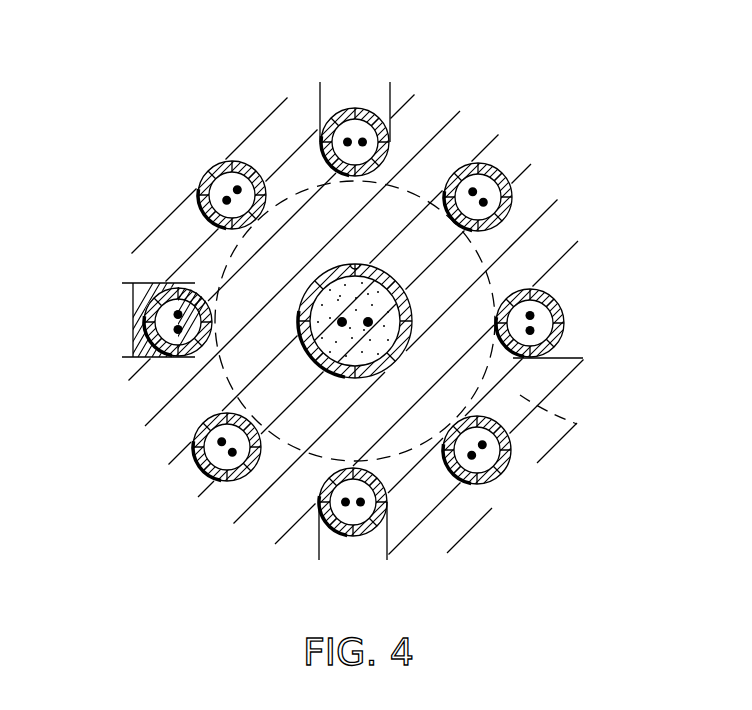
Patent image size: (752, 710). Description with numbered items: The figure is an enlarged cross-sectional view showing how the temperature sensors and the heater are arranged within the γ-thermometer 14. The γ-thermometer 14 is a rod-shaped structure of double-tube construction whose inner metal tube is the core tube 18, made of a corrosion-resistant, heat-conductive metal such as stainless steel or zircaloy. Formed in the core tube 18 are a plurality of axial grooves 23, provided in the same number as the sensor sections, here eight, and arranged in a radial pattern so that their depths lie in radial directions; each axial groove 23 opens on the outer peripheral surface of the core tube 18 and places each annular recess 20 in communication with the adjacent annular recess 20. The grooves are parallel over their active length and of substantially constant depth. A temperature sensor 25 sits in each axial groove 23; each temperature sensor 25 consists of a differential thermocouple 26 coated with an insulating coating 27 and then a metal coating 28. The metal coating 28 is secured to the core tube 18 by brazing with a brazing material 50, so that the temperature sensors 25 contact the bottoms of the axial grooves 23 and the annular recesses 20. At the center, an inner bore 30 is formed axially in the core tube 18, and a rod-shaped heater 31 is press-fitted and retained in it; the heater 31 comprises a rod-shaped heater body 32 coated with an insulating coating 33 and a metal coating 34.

The γ-thermometer 14 is at (480, 103).
The core tube 18 is at (447, 515).
The annular recess 20 is at (573, 422).
The axial groove 23 is at (206, 150).
The temperature sensor 25 is at (356, 106).
The differential thermocouple 26 is at (238, 178).
The insulating coating 27 is at (203, 193).
The metal coating 28 is at (212, 192).
The inner bore 30 is at (402, 180).
The heater 31 is at (628, 203).
The heater body 32 is at (397, 296).
The insulating coating 33 is at (400, 301).
The metal coating 34 is at (393, 288).
The brazing material 50 is at (133, 327).